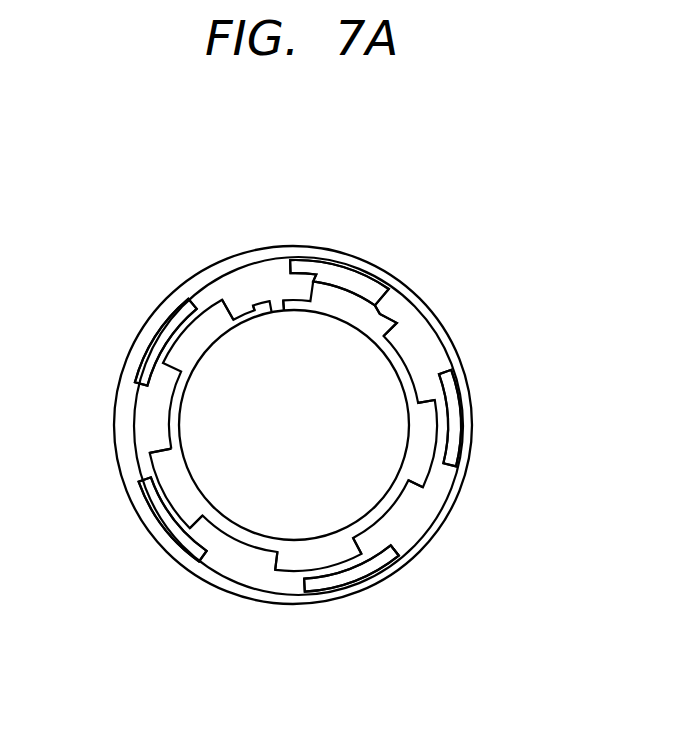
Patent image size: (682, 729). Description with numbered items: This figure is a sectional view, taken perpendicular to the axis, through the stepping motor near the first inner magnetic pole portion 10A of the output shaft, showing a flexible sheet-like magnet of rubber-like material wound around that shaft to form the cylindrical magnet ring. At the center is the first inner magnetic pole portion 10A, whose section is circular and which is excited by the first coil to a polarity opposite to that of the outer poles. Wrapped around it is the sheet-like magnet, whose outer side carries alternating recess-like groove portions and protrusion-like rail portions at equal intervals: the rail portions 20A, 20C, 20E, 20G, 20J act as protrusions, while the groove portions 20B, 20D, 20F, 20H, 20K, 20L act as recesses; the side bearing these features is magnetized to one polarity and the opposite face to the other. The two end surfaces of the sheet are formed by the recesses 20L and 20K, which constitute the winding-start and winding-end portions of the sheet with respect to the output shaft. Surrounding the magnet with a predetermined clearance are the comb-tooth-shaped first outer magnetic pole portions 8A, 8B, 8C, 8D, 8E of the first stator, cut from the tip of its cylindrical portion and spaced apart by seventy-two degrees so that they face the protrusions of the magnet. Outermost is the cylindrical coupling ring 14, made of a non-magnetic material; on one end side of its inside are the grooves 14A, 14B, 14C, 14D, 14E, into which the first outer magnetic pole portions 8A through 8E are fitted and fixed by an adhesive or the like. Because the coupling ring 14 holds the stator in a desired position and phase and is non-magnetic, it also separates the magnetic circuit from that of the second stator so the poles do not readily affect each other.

The coupling ring 14 is at (266, 248).
The first inner magnetic pole portion 10A is at (265, 415).
The first outer magnetic pole portion 8A is at (178, 306).
The first outer magnetic pole portion 8B is at (140, 497).
The first outer magnetic pole portion 8C is at (320, 592).
The first outer magnetic pole portion 8D is at (456, 445).
The first outer magnetic pole portion 8E is at (367, 283).
The groove 14A is at (148, 347).
The groove 14B is at (166, 540).
The groove 14C is at (370, 560).
The groove 14D is at (462, 406).
The groove 14E is at (336, 272).
The rail portion 20A is at (211, 300).
The groove portion 20B is at (165, 440).
The rail portion 20C is at (197, 546).
The groove portion 20D is at (256, 548).
The rail portion 20E is at (412, 548).
The groove portion 20F is at (397, 545).
The rail portion 20G is at (405, 513).
The groove portion 20H is at (396, 358).
The rail portion 20J is at (384, 314).
The groove portion 20K is at (250, 300).
The groove portion 20L is at (287, 303).